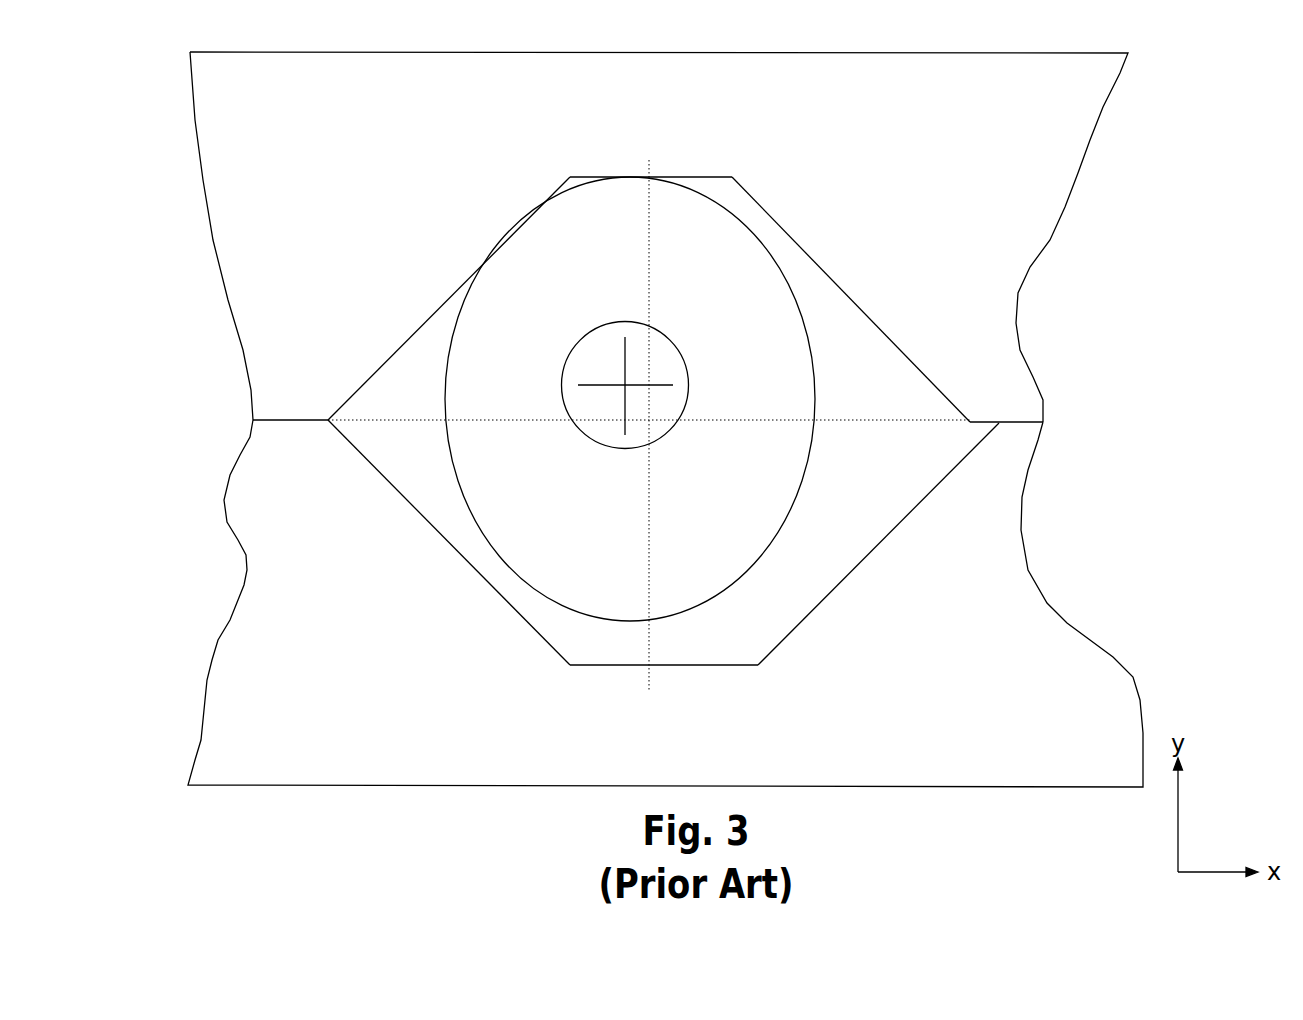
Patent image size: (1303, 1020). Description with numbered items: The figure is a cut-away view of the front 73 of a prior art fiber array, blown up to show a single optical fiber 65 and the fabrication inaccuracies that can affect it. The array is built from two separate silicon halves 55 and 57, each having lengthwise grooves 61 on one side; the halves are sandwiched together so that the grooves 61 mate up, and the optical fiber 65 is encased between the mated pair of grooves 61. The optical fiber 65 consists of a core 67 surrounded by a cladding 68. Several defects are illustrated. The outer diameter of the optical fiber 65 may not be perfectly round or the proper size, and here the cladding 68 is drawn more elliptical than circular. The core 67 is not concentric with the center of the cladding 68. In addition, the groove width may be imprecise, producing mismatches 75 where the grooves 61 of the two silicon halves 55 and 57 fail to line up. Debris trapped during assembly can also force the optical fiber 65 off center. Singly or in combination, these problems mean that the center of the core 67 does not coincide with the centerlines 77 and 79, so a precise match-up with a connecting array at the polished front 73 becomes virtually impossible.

The silicon half 55 is at (1046, 667).
The silicon half 57 is at (1020, 148).
The grooves 61 is at (689, 172).
The optical fiber 65 is at (446, 362).
The core 67 is at (579, 362).
The cladding 68 is at (560, 250).
The front 73 is at (728, 419).
The mismatches 75 is at (1003, 456).
The centerline 77 is at (763, 415).
The centerline 79 is at (641, 547).